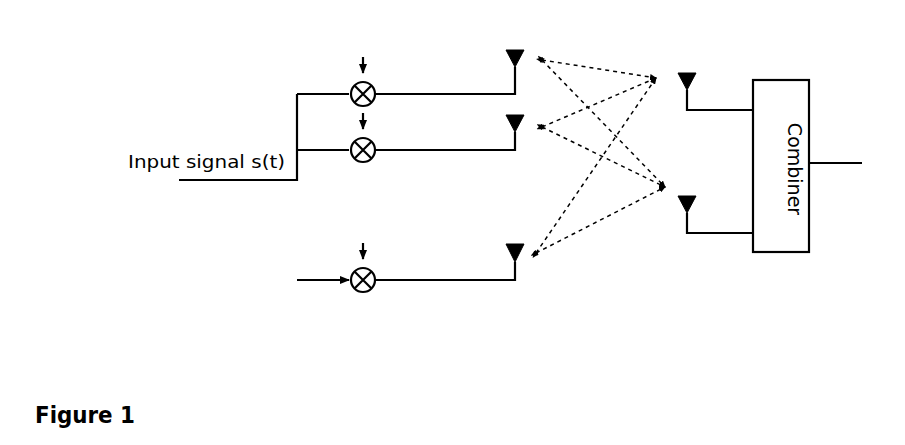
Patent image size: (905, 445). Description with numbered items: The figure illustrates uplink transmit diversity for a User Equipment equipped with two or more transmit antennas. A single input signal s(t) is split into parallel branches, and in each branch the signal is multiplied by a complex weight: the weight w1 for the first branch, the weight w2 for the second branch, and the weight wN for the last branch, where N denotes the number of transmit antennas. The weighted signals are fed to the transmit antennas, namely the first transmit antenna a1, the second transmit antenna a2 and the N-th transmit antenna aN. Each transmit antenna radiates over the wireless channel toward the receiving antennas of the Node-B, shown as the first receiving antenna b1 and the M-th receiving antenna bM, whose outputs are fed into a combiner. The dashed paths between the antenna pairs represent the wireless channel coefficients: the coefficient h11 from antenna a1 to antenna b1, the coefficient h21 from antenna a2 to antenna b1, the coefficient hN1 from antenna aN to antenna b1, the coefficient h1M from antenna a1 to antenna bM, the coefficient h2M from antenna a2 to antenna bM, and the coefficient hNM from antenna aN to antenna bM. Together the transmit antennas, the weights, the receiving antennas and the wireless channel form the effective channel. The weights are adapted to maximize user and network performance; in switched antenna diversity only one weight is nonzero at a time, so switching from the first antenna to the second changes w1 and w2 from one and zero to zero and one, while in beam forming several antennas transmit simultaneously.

The complex weight for antenna 1 w1 is at (371, 81).
The complex weight for antenna 2 w2 is at (371, 137).
The complex weight for antenna N wN is at (371, 264).
The first transmit antenna a1 is at (460, 63).
The second transmit antenna a2 is at (458, 123).
The N-th transmit antenna aN is at (453, 249).
The first receiving antenna b1 is at (715, 80).
The M-th receiving antenna bM is at (715, 204).
The channel coefficient h1,1 h11 is at (599, 62).
The channel coefficient h2,1 h21 is at (599, 101).
The channel coefficient h2,M h2M is at (603, 157).
The channel coefficient h1,M h1M is at (604, 123).
The channel coefficient hN,1 hN1 is at (593, 165).
The channel coefficient hN,M hNM is at (600, 226).